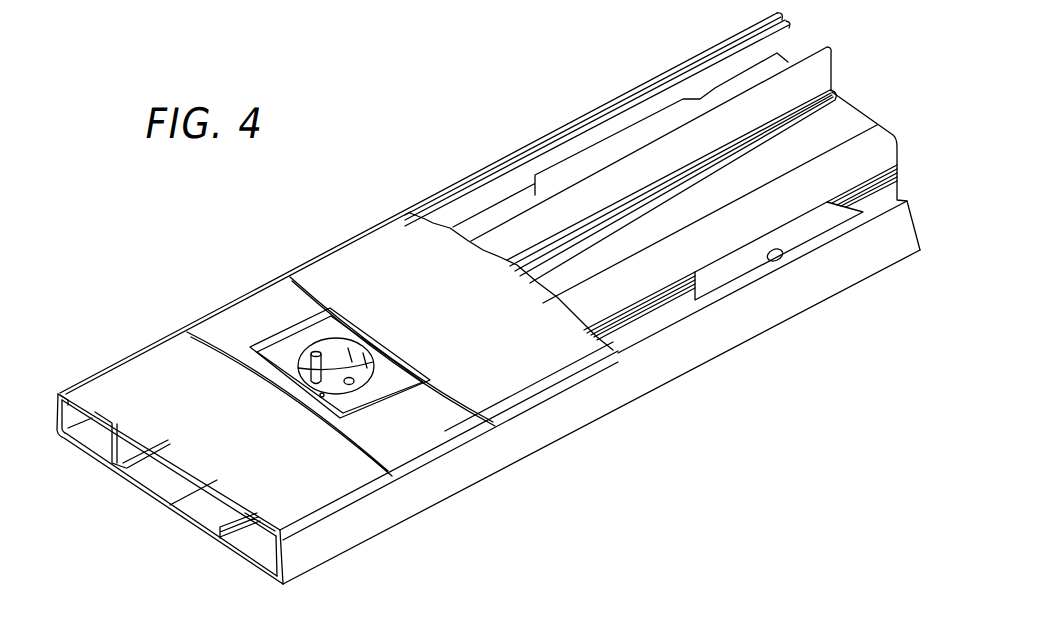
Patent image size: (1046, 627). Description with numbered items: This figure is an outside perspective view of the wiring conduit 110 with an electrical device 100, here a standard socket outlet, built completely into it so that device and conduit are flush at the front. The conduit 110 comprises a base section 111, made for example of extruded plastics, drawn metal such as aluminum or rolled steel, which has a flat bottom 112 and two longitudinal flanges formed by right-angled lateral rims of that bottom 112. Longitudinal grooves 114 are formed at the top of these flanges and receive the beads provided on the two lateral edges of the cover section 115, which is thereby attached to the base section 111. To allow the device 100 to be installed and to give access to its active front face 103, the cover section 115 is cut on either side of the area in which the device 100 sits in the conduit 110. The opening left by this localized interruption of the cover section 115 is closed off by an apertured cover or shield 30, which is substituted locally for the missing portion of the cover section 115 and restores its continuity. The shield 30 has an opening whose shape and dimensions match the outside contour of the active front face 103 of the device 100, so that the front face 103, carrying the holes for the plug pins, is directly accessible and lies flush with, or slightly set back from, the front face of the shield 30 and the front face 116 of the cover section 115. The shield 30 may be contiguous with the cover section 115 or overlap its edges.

The apertured cover or shield 30 is at (271, 305).
The electrical device 100 is at (404, 360).
The active front face 103 is at (280, 360).
The wiring conduit 110 is at (650, 410).
The base section 111 is at (798, 303).
The flat bottom 112 is at (740, 247).
The longitudinal grooves 114 is at (551, 140).
The cover section 115 is at (148, 357).
The front face of the cover 116 is at (246, 433).